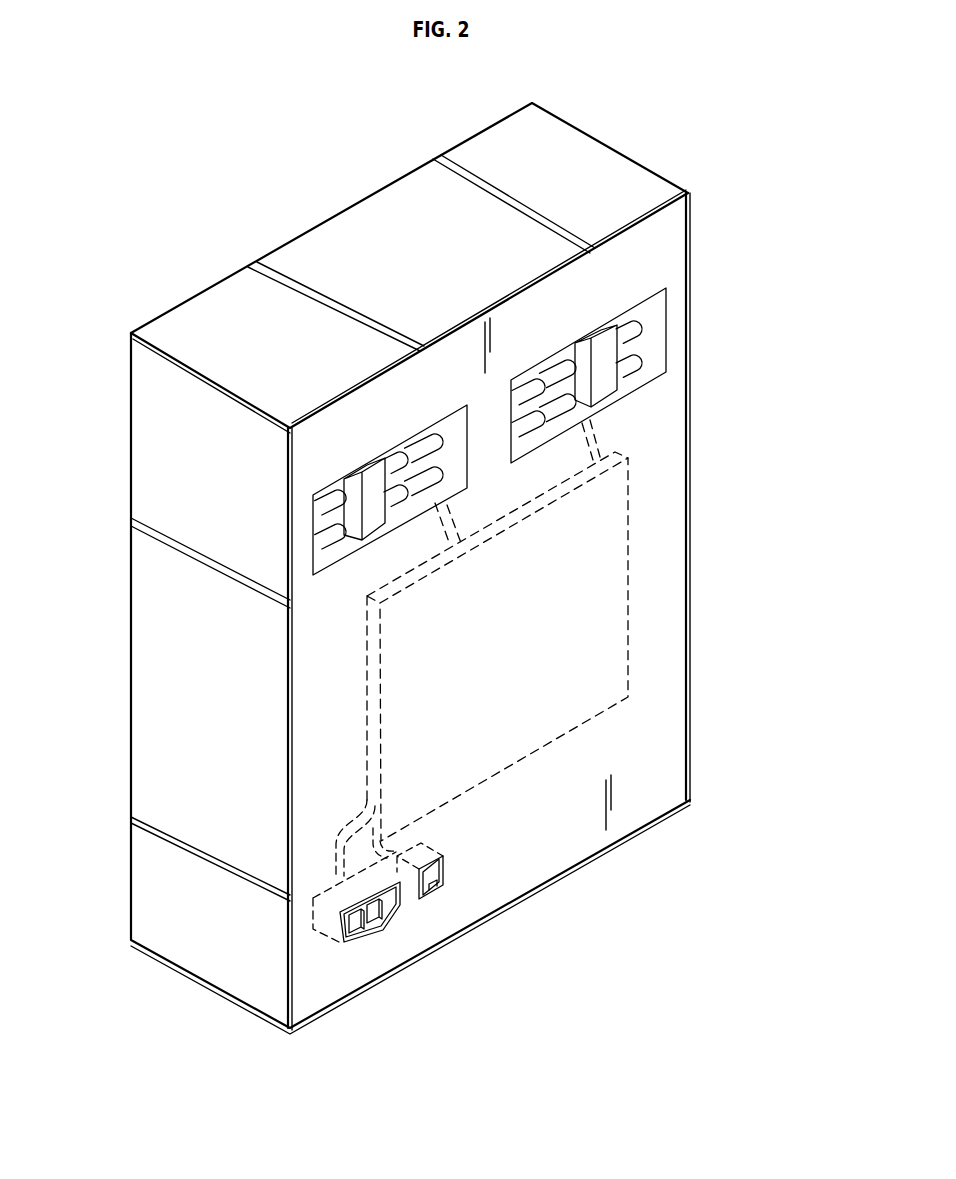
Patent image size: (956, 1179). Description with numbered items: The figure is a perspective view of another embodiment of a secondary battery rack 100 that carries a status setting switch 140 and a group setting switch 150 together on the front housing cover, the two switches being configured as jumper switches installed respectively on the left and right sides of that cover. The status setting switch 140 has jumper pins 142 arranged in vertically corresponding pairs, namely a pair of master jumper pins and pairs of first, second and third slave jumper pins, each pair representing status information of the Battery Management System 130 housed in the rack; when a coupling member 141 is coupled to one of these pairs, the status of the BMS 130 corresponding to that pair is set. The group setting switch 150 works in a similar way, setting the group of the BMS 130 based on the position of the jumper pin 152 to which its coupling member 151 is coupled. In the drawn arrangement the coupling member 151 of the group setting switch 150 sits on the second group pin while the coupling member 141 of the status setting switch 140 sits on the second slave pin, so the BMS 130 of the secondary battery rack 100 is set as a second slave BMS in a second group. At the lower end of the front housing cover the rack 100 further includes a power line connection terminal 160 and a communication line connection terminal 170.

The secondary battery rack 100 is at (613, 167).
The Battery Management System (BMS) 130 is at (628, 611).
The status setting switch 140 is at (672, 327).
The coupling member 141 is at (610, 387).
The jumper pins 142 is at (570, 404).
The group setting switch 150 is at (312, 508).
The coupling member 151 is at (376, 521).
The jumper pin 152 is at (407, 503).
The power line connection terminal 160 is at (372, 941).
The communication line connection terminal 170 is at (440, 889).